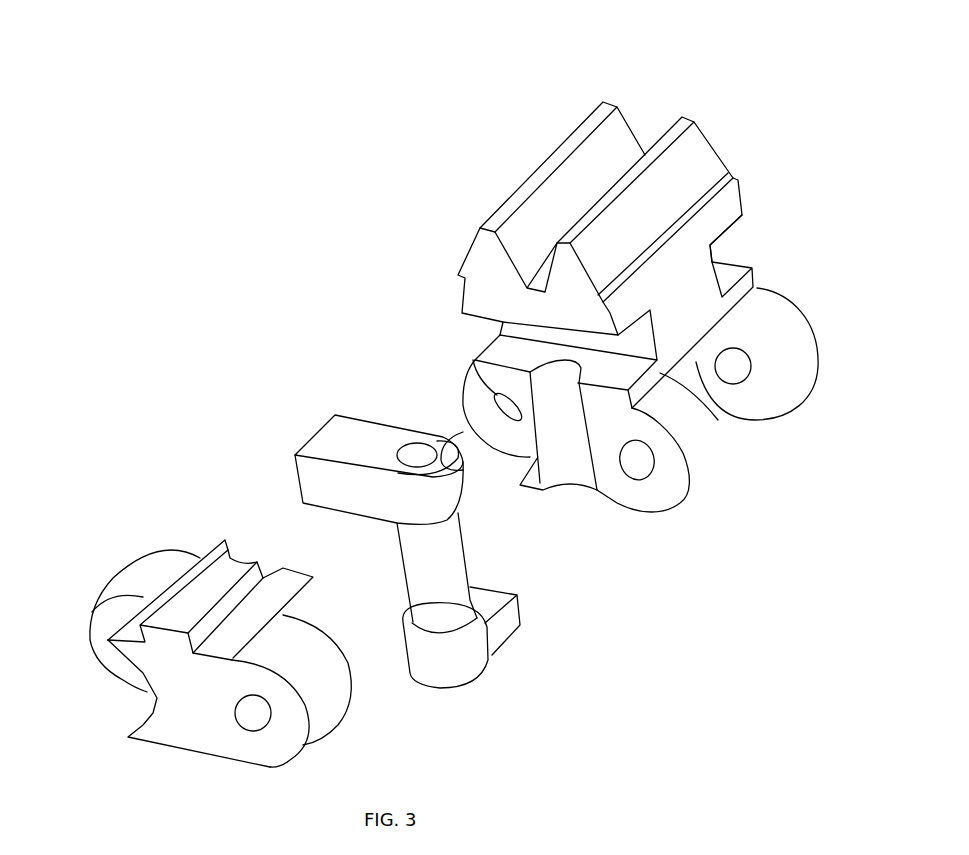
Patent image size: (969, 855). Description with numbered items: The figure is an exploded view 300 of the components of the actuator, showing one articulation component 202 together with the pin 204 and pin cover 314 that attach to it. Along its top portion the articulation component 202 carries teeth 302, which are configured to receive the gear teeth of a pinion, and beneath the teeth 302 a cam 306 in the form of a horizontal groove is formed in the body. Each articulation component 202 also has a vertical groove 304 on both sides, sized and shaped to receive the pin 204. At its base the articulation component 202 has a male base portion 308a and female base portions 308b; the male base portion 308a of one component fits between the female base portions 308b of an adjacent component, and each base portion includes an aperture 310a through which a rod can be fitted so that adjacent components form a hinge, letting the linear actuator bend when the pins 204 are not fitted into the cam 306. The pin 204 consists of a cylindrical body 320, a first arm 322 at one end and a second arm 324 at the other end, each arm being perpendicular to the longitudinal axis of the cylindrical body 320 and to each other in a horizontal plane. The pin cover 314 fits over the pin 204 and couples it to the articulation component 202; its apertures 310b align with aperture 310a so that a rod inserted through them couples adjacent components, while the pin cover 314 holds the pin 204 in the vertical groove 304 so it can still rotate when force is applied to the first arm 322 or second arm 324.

The clamp assembly 300 is at (405, 31).
The articulation component 202 is at (485, 132).
The pin 204 is at (298, 372).
The teeth 302 is at (703, 140).
The vertical groove 304 is at (570, 468).
The cam 306 is at (727, 245).
The male base portion 308a is at (456, 382).
The female base portion 308b is at (813, 335).
The aperture 310a is at (737, 371).
The apertures 310b is at (257, 714).
The pin cover 314 is at (128, 519).
The cylindrical body 320 is at (403, 563).
The first arm 322 is at (326, 421).
The second arm 324 is at (520, 613).